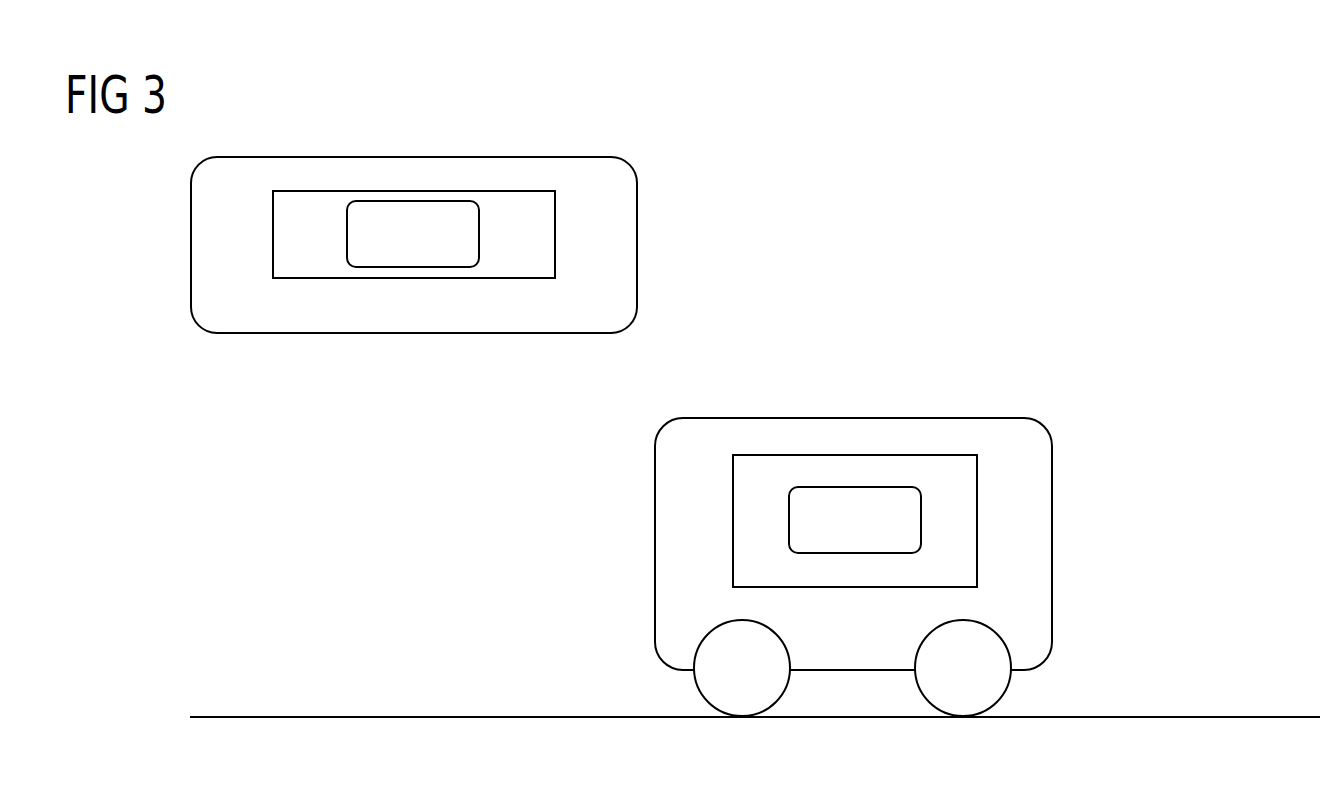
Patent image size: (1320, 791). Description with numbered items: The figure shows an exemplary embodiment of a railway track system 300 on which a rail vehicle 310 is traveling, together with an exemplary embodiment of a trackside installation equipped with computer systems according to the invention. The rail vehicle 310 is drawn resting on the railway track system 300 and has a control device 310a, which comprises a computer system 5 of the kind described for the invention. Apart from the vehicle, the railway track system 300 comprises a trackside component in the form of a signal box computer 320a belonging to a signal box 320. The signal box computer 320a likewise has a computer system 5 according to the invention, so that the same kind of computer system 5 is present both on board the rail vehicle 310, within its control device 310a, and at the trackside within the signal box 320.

The signal box 320 is at (262, 334).
The signal box computer 320a is at (368, 279).
The computer system 5 is at (405, 250).
The rail vehicle 310 is at (747, 418).
The control device 310a is at (890, 455).
The railway track system 300 is at (1175, 717).